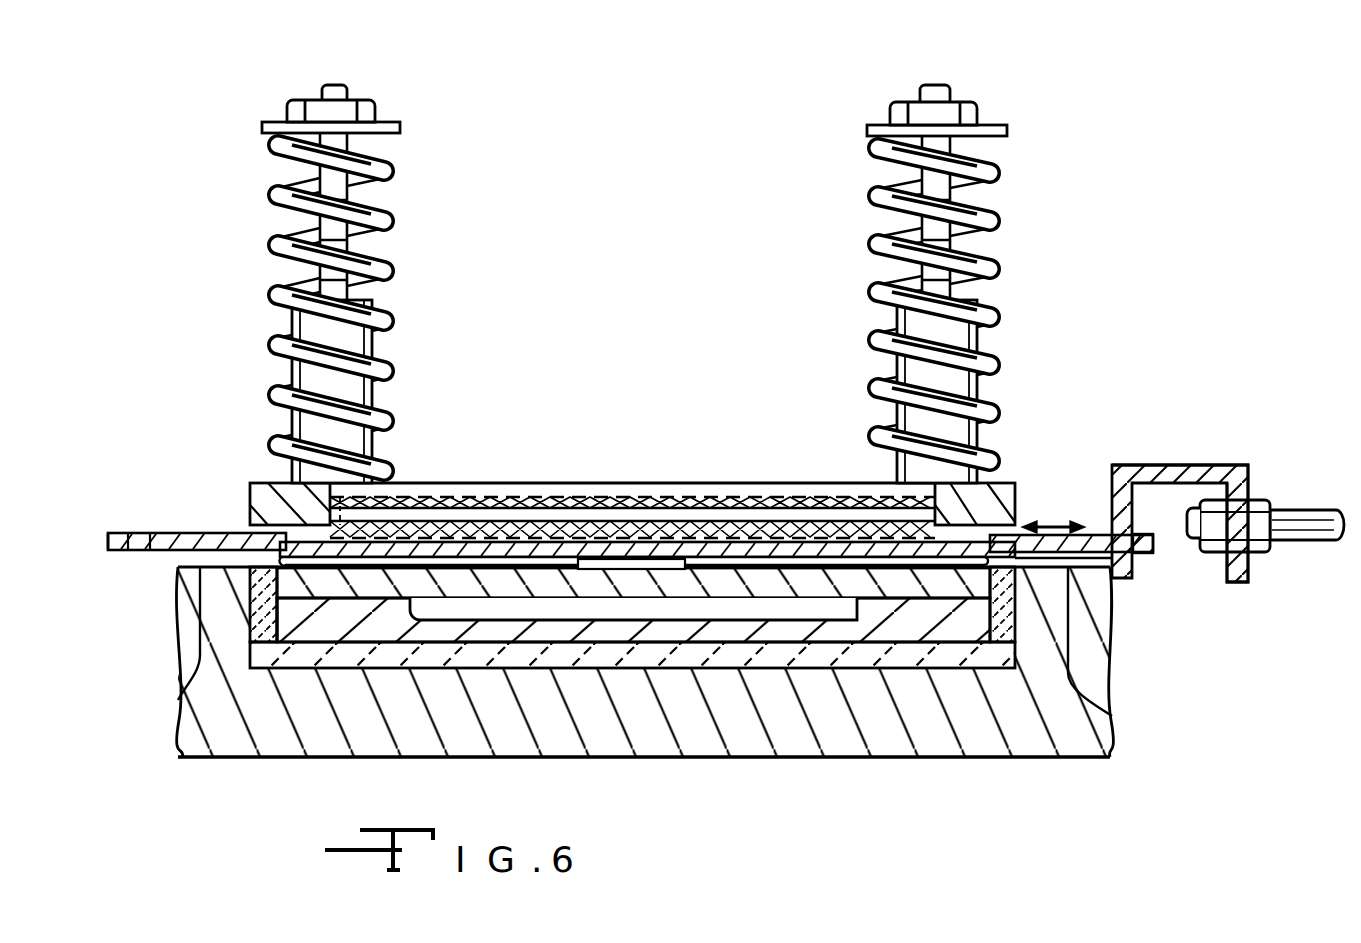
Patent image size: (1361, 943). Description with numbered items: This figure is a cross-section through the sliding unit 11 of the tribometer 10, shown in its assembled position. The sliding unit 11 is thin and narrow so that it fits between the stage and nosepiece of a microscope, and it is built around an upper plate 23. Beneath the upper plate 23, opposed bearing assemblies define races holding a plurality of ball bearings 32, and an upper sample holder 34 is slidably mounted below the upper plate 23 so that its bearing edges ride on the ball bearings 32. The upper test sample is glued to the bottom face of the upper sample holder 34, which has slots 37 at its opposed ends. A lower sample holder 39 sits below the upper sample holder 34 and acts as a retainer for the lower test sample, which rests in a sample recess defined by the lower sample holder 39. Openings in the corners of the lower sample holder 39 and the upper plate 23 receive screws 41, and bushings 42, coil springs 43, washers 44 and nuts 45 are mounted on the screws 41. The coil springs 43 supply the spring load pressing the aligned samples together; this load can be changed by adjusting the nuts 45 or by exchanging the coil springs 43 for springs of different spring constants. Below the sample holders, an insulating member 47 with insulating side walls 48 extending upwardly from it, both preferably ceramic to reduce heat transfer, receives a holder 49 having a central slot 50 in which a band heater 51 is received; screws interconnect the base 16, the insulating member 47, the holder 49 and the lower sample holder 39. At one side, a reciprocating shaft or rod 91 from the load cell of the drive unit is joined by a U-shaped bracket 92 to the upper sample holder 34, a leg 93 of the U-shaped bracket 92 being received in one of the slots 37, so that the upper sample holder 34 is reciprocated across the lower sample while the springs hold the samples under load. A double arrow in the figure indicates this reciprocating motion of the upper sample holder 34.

The tribometer 10 is at (800, 759).
The sliding unit 11 is at (550, 482).
The base 16 is at (1017, 760).
The upper plate 23 is at (267, 483).
The ball bearings 32 is at (600, 497).
The upper sample holder 34 is at (177, 532).
The slots 37 is at (142, 552).
The lower sample holder 39 is at (893, 572).
The screws 41 is at (393, 150).
The bushings 42 is at (380, 343).
The coil springs 43 is at (393, 215).
The washer plate 44 is at (400, 127).
The nuts 45 is at (365, 100).
The insulating member 47 is at (578, 642).
The insulating side walls 48 is at (247, 610).
The holder 49 is at (307, 643).
The central slot 50 is at (417, 614).
The band heater 51 is at (683, 622).
The reciprocating shaft or rod 91 is at (1295, 508).
The U-shaped bracket 92 is at (1158, 465).
The leg 93 is at (1108, 488).